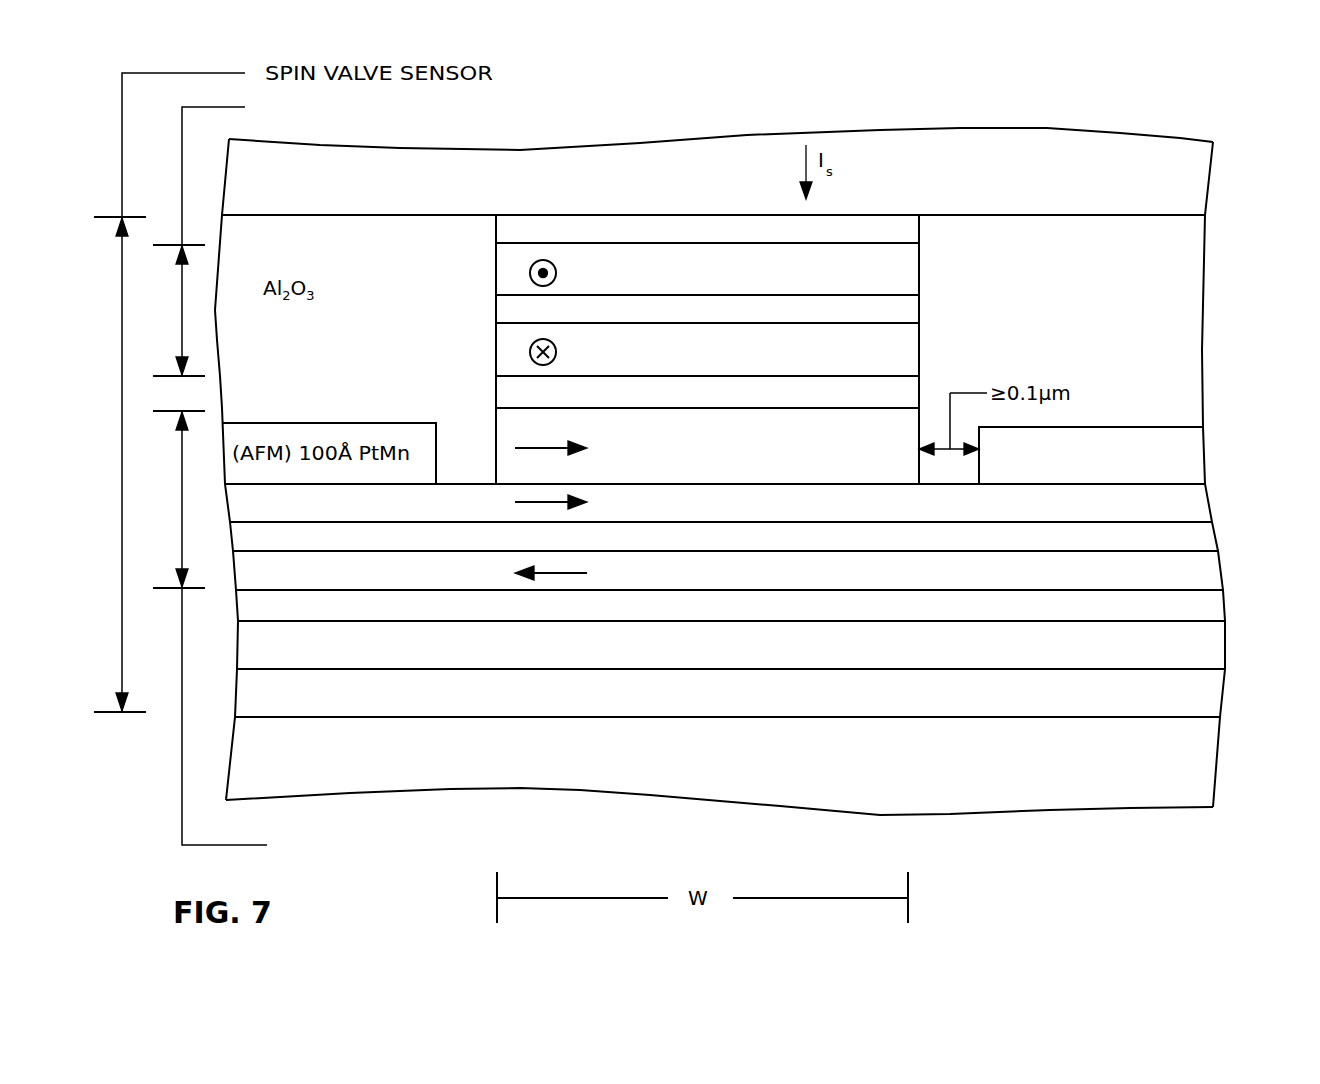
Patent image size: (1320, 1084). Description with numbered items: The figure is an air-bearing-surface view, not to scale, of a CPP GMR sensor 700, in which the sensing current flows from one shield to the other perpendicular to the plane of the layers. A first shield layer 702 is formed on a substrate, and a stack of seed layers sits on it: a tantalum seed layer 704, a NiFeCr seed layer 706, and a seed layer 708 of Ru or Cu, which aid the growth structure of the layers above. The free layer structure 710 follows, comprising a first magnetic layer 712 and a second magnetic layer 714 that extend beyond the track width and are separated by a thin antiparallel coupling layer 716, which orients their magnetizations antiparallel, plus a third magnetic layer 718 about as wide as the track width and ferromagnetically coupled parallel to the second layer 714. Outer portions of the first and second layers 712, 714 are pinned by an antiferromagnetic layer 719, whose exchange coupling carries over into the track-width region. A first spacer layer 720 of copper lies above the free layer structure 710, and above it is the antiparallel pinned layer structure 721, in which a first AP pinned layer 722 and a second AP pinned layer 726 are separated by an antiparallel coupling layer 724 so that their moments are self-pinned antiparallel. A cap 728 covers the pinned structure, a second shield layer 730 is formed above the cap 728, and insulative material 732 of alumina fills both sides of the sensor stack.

The CPP GMR sensor 700 is at (1183, 127).
The first shield layer 702 is at (1218, 755).
The seed layer SL1 704 is at (889, 706).
The seed layer SL2 706 is at (889, 659).
The seed layer SL3 708 is at (889, 620).
The free layer structure 710 is at (383, 635).
The first magnetic layer 712 is at (889, 585).
The second magnetic layer 714 is at (889, 514).
The antiparallel coupling layer 716 is at (889, 549).
The third magnetic layer 718 is at (889, 463).
The antiferromagnetic layer 719 is at (1205, 458).
The first spacer layer 720 is at (889, 403).
The antiparallel pinned layer structure 721 is at (400, 235).
The first AP pinned magnetic layer 722 is at (889, 359).
The antiparallel coupling layer APC2 724 is at (889, 320).
The second AP pinned magnetic layer 726 is at (889, 280).
The cap 728 is at (889, 240).
The second shield layer 730 is at (1204, 168).
The insulative material 732 is at (1203, 293).